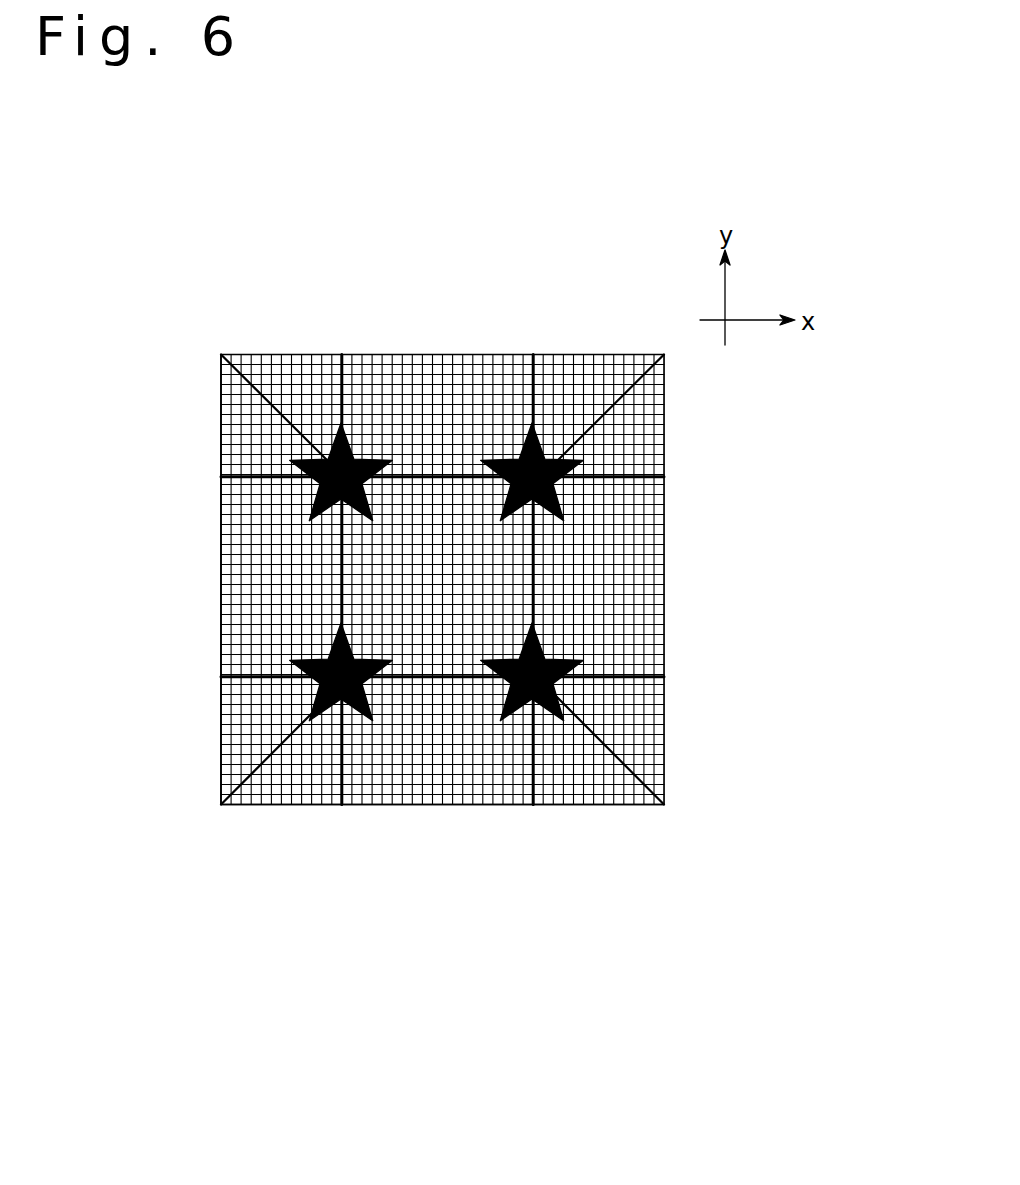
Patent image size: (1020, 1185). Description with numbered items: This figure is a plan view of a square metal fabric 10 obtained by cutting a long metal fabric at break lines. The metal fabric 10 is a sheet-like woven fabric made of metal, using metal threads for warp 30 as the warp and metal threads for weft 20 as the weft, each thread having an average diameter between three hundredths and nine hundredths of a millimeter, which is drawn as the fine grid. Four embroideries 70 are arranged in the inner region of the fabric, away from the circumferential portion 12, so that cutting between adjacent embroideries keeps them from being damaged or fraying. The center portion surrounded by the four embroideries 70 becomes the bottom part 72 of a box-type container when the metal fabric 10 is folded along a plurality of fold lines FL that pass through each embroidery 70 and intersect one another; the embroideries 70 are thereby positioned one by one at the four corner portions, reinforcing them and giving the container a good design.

The metal fabric 10 is at (535, 292).
The circumferential portion 12 is at (672, 436).
The metal thread for weft 20 is at (441, 804).
The metal thread for warp 30 is at (221, 582).
The embroidery 70 is at (562, 508).
The bottom part 72 is at (420, 617).
The fold line FL is at (425, 478).